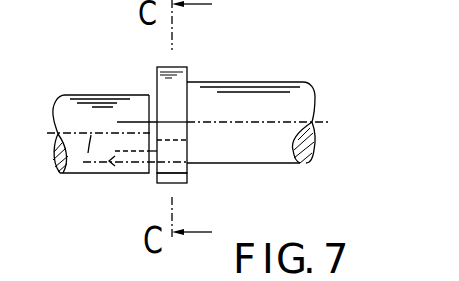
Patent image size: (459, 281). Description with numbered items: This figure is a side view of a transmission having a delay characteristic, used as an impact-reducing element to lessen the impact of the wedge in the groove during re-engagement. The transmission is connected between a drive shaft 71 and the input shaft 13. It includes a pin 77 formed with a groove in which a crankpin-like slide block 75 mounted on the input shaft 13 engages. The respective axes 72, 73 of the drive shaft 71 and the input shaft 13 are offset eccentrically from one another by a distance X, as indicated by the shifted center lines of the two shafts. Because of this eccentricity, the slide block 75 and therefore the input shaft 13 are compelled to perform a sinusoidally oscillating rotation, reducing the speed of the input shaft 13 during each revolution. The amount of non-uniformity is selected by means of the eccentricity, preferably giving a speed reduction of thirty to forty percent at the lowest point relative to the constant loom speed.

The input shaft 13 is at (100, 96).
The drive shaft 71 is at (238, 82).
The axis of drive shaft 72 is at (275, 124).
The axis of input shaft 73 is at (77, 163).
The slide block 75 is at (170, 177).
The pin 77 is at (185, 67).